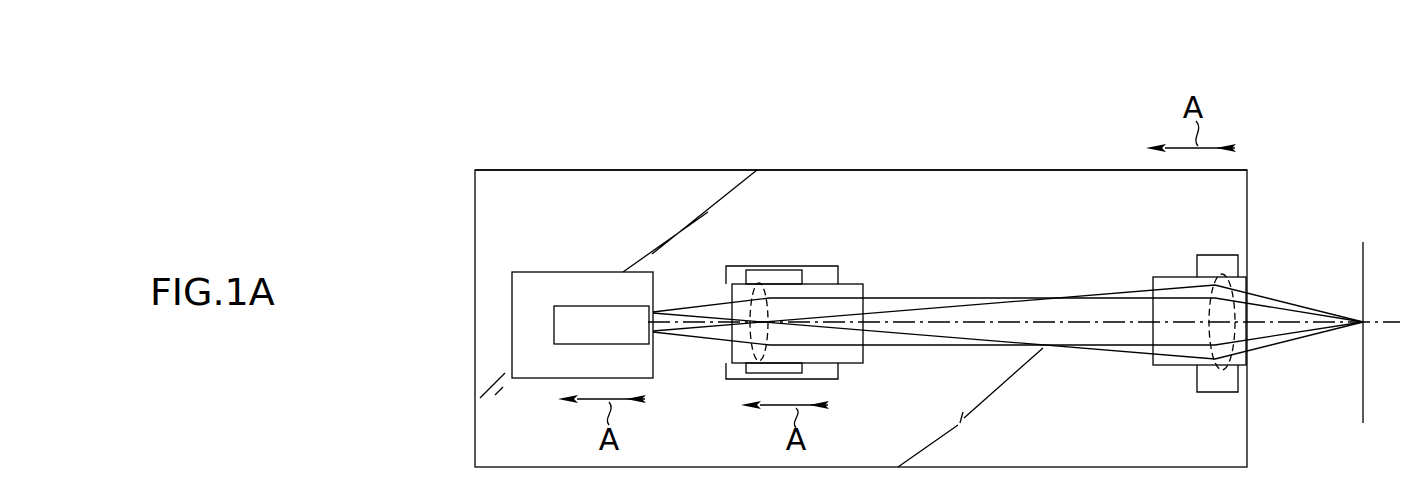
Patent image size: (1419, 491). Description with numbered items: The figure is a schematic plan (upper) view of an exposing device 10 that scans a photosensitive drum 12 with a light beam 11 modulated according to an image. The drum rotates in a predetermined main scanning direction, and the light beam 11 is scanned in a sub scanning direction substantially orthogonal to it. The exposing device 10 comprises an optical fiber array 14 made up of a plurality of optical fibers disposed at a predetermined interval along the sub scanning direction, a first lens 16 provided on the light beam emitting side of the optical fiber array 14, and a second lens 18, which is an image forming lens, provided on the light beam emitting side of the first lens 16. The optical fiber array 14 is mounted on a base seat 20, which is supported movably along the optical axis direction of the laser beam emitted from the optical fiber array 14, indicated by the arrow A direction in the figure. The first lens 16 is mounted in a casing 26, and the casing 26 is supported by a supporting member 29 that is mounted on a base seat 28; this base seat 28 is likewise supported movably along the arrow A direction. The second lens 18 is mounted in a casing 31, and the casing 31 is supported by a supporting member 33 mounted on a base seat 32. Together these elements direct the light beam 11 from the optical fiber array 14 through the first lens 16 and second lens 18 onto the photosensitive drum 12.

The exposing device 10 is at (888, 116).
The light beam 11 is at (953, 297).
The photosensitive drum 12 is at (1361, 286).
The optical fiber array 14 is at (603, 305).
The first lens 16 is at (758, 284).
The second lens 18 is at (1215, 276).
The base seat 20 is at (532, 298).
The casing 26 is at (850, 286).
The base seat 28 is at (825, 373).
The supporting member 29 is at (784, 270).
The casing 31 is at (1172, 284).
The base seat 32 is at (1045, 198).
The supporting member 33 is at (1214, 384).